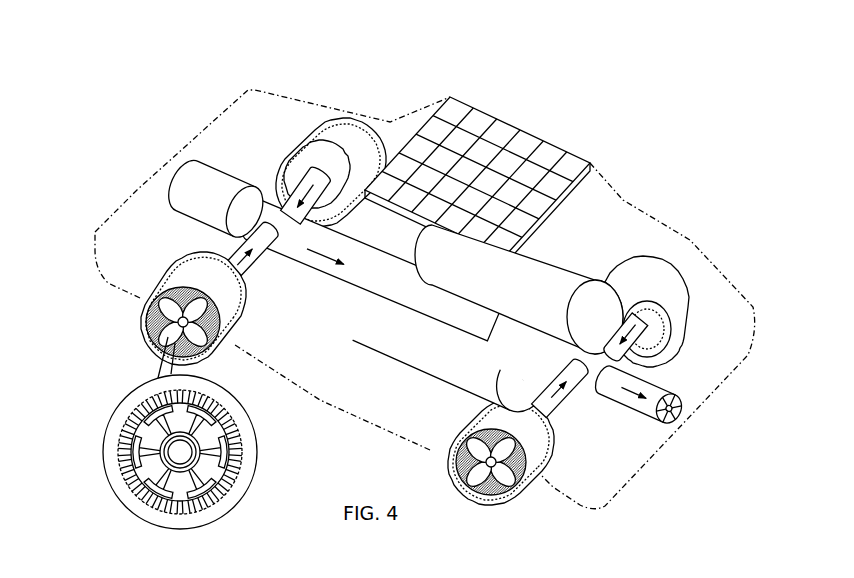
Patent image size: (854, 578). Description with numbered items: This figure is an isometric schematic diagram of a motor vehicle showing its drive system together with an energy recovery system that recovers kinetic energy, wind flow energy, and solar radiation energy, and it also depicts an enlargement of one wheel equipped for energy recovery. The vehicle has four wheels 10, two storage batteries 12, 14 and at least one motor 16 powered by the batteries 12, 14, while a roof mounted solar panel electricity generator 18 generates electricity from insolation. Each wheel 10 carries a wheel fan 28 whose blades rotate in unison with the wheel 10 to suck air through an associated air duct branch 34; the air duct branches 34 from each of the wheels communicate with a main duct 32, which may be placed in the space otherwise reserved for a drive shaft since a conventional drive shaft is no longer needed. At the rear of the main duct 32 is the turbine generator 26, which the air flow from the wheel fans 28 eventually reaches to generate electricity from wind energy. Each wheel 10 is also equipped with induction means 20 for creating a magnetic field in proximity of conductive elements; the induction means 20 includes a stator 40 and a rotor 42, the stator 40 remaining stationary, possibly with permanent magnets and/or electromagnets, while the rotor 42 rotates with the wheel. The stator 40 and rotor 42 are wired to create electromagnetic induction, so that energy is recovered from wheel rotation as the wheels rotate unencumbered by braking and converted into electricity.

The wheel 10 is at (307, 117).
The storage battery 12 is at (483, 330).
The storage battery 14 is at (557, 277).
The motor 16 is at (235, 177).
The roof mounted solar panel electricity generator 18 is at (482, 117).
The induction means 20 is at (100, 408).
The turbine generator 26 is at (685, 390).
The wheel fan 28 is at (157, 323).
The main duct 32 is at (350, 233).
The air duct branch 34 is at (320, 173).
The stator 40 is at (173, 453).
The rotor 42 is at (117, 483).